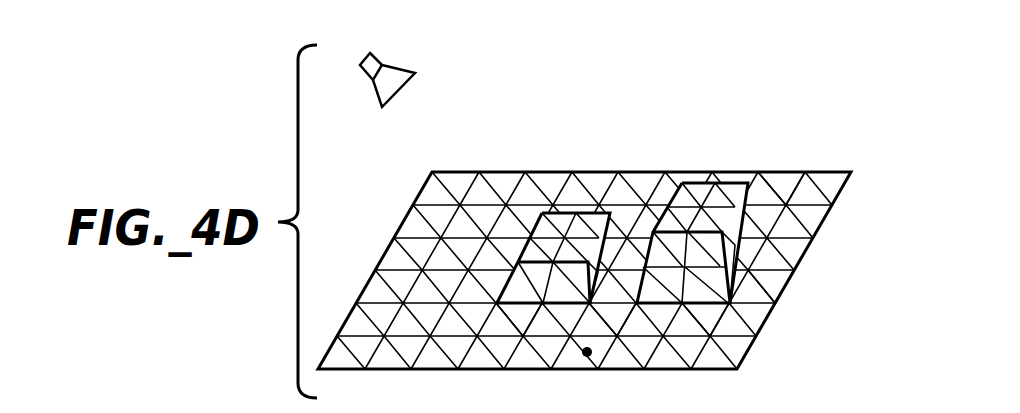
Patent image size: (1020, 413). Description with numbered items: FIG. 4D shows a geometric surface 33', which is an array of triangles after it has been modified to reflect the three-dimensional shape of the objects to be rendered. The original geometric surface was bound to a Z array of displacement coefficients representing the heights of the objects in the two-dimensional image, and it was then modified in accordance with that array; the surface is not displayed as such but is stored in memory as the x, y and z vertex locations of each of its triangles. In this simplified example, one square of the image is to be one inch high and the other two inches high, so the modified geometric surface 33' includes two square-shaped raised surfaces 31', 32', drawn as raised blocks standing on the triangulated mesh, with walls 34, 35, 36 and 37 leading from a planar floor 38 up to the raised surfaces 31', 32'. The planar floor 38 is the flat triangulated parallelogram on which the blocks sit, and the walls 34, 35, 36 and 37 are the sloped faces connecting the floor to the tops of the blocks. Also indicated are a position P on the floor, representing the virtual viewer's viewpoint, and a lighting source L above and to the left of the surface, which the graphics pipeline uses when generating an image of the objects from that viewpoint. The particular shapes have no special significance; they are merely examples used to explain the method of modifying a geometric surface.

The square-shaped raised surface 31' is at (544, 217).
The square-shaped raised surface 32' is at (686, 217).
The geometric surface 33' is at (615, 270).
The wall 34 is at (518, 293).
The wall 35 is at (600, 272).
The wall 36 is at (698, 292).
The wall 37 is at (753, 240).
The planar floor 38 is at (783, 177).
The position P is at (589, 357).
The lighting source L is at (403, 68).